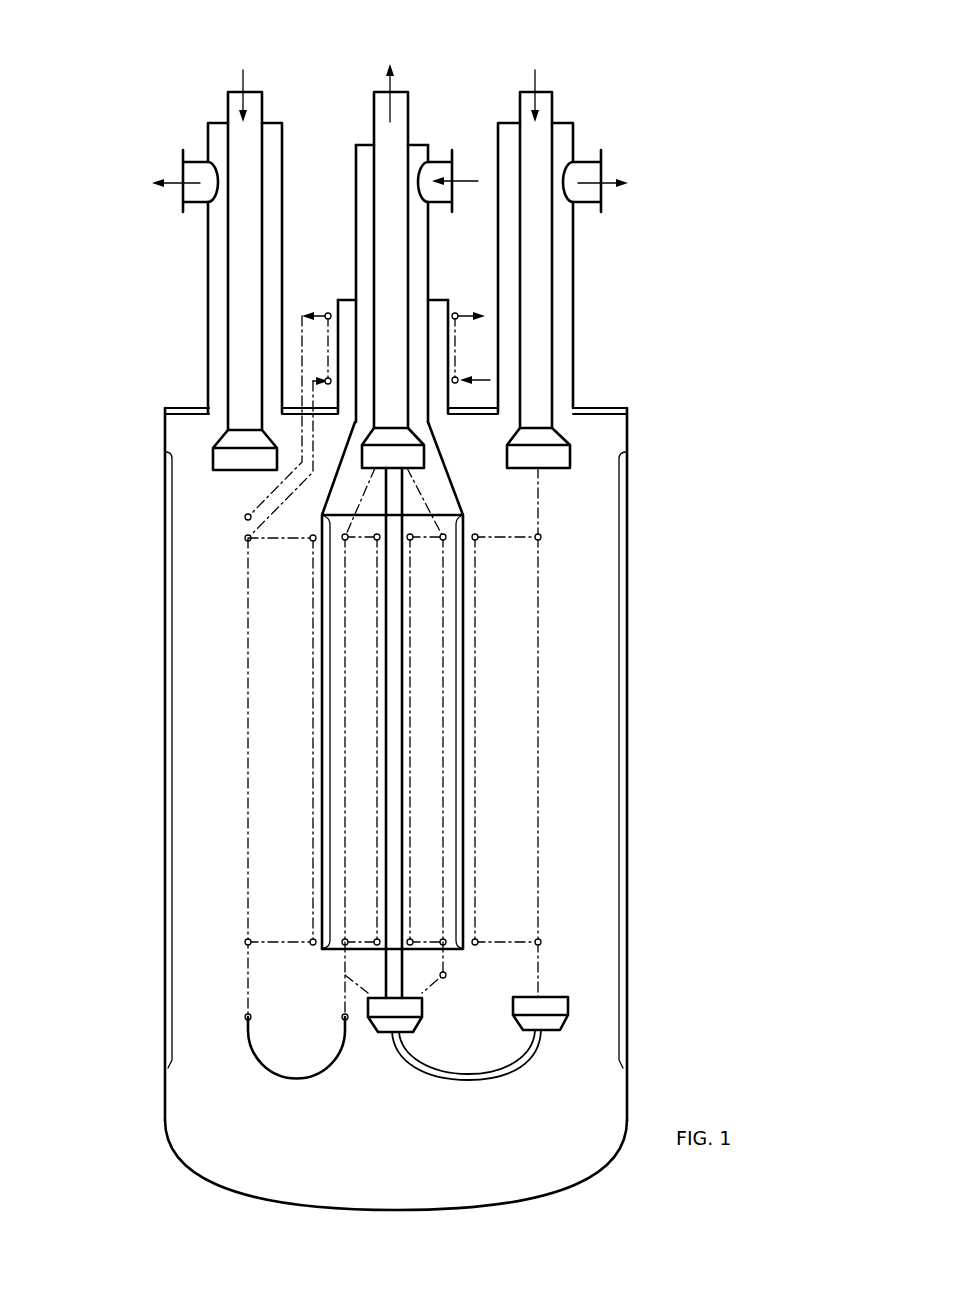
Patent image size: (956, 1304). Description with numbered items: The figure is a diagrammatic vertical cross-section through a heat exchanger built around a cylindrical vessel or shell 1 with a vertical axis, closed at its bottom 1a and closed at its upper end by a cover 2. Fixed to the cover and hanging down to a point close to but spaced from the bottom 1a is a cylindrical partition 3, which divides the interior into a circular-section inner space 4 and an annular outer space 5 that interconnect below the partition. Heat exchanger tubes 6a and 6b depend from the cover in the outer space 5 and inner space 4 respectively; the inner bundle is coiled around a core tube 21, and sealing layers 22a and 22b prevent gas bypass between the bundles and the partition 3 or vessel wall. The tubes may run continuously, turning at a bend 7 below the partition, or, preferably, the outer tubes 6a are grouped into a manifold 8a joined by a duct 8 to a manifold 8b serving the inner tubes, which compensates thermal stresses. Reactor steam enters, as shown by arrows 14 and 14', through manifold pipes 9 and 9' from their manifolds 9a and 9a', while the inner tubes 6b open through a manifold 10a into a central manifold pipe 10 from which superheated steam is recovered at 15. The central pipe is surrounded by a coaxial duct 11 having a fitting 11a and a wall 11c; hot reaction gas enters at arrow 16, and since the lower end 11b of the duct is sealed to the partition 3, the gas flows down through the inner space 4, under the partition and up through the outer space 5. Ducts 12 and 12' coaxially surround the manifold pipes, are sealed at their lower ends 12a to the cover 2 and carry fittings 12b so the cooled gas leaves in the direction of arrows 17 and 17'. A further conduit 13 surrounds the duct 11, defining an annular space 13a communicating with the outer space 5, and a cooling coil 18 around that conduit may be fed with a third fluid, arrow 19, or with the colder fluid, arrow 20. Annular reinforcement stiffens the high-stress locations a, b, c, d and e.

The cylindrical vessel or shell 1 is at (627, 686).
The bottom 1a is at (432, 1212).
The cover 2 is at (600, 406).
The cylindrical shell or partition 3 is at (465, 605).
The inner space 4 is at (444, 657).
The annular outer space 5 is at (588, 795).
The heat exchanger tubes 6a is at (540, 723).
The heat exchanger tubes 6b is at (445, 725).
The bend 7 is at (320, 1078).
The duct 8 is at (415, 1071).
The manifold 8a is at (564, 1030).
The manifold 8b is at (418, 1020).
The manifold pipe 9 is at (561, 260).
The manifold pipe 9' is at (216, 261).
The manifold 9a is at (546, 482).
The manifold 9a' is at (231, 476).
The central manifold pipe 10 is at (409, 108).
The manifold 10a is at (425, 455).
The second tube or duct 11 is at (428, 148).
The fitting 11a is at (436, 204).
The lower end 11b is at (430, 418).
The tube wall 11c is at (368, 223).
The duct 12 is at (563, 258).
The duct 12' is at (214, 260).
The lower end 12a is at (578, 405).
The fitting 12b is at (593, 160).
The further conduit 13 is at (448, 300).
The annular space 13a is at (441, 380).
The arrow 14 is at (557, 88).
The arrow 14' is at (270, 88).
The superheated steam recovery 15 is at (397, 84).
The arrow 16 is at (465, 183).
The arrow 17 is at (619, 197).
The arrow 17' is at (171, 184).
The cooling coil 18 is at (458, 318).
The arrow 19 is at (459, 378).
The arrow 20 is at (328, 376).
The core tube 21 is at (393, 602).
The sealing layer 22a is at (460, 570).
The sealing layer 22b is at (616, 577).
The location a is at (346, 414).
The location b is at (338, 300).
The location c is at (356, 298).
The location d is at (357, 145).
The location e is at (375, 145).